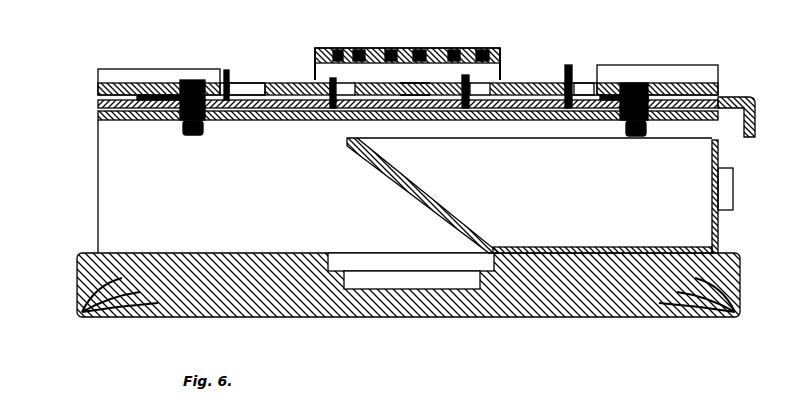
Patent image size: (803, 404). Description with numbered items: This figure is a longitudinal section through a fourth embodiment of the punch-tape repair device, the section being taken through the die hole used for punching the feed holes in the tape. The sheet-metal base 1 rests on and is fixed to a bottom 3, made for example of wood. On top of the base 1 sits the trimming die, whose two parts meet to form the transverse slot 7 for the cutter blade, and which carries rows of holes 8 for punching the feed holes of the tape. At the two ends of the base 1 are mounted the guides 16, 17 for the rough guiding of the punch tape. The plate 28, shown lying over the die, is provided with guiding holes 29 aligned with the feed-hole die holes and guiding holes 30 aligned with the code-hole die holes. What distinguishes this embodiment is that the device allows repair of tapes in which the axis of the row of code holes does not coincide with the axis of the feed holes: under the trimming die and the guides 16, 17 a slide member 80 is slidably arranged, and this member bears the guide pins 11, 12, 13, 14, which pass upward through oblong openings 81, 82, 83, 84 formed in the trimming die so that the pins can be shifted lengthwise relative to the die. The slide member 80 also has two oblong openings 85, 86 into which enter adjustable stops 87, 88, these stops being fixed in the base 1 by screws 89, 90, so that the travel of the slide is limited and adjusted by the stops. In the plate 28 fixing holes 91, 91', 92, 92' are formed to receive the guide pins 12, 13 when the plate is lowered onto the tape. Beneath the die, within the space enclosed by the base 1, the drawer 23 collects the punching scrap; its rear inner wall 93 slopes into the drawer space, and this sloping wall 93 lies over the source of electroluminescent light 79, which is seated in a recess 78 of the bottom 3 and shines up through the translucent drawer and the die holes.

The base 1 is at (276, 121).
The bottom 3 is at (741, 258).
The slot 7 is at (410, 86).
The holes for punching the feed holes 8 is at (385, 86).
The guiding pin 11 is at (229, 83).
The guiding pin 12 is at (315, 80).
The guiding pin 13 is at (500, 82).
The guiding pin 14 is at (565, 72).
The guide 16 is at (148, 74).
The guide 17 is at (700, 73).
The drawer 23 is at (720, 228).
The plate 28 is at (503, 50).
The guiding holes 29 is at (391, 49).
The guiding holes 30 is at (420, 49).
The recess 78 is at (392, 276).
The source of electroluminescent light 79 is at (338, 256).
The slide member 80 is at (732, 97).
The oblong opening 81 is at (258, 88).
The oblong opening 82 is at (350, 120).
The oblong opening 83 is at (486, 120).
The oblong opening 84 is at (578, 83).
The oblong opening 85 is at (172, 118).
The oblong opening 86 is at (596, 120).
The adjustable stop 87 is at (190, 82).
The adjustable stop 88 is at (637, 83).
The screw 89 is at (182, 140).
The screw 90 is at (640, 140).
The fixing hole 91 is at (328, 43).
The fixing hole 92 is at (355, 43).
The fixing hole 91' is at (460, 43).
The fixing hole 92' is at (488, 43).
The rear inner wall 93 is at (350, 150).